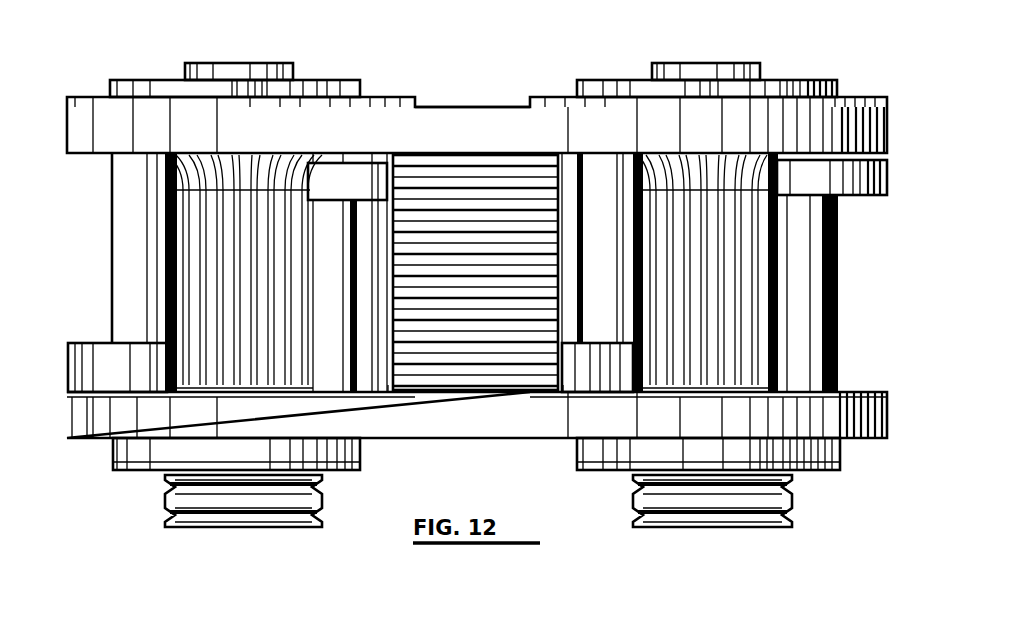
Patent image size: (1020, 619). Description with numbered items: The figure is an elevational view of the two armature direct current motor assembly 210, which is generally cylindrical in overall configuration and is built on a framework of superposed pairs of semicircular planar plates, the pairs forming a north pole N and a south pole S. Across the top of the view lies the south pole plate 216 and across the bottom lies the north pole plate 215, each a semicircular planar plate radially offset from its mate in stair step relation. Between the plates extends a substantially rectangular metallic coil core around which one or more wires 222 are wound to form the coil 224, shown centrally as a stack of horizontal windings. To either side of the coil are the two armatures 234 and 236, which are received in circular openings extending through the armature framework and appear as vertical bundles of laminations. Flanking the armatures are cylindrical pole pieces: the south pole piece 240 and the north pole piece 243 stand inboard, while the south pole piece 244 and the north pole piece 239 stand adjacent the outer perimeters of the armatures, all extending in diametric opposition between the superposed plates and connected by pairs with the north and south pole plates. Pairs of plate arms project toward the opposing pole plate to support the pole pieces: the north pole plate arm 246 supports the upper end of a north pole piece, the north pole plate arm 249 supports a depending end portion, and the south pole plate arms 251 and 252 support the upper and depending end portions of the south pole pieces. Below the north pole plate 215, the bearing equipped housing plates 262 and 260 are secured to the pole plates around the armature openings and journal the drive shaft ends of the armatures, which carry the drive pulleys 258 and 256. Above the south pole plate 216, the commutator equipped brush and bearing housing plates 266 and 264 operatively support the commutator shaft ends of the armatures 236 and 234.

The two armature direct current motor assembly 210 is at (603, 56).
The brush and bearing equipped housing plate 266 is at (318, 80).
The brush and bearing equipped housing plate 264 is at (780, 80).
The south pole S is at (478, 105).
The north pole N is at (469, 441).
The south pole plate 216 is at (488, 143).
The north pole plate 215 is at (487, 431).
The coil 224 is at (503, 170).
The wire 222 is at (523, 370).
The south pole piece 240 is at (632, 132).
The north pole piece 243 is at (332, 385).
The south pole plate arm 251 is at (358, 194).
The south pole plate arm 252 is at (590, 373).
The south pole piece 244 is at (126, 186).
The north pole piece 239 is at (840, 300).
The north pole plate arm 246 is at (858, 196).
The north pole plate arm 249 is at (105, 360).
The armature 236 is at (178, 262).
The armature 234 is at (780, 250).
The bearing equipped housing plate 262 is at (360, 458).
The bearing equipped housing plate 260 is at (840, 455).
The drive pulley 258 is at (322, 495).
The drive pulley 256 is at (792, 495).